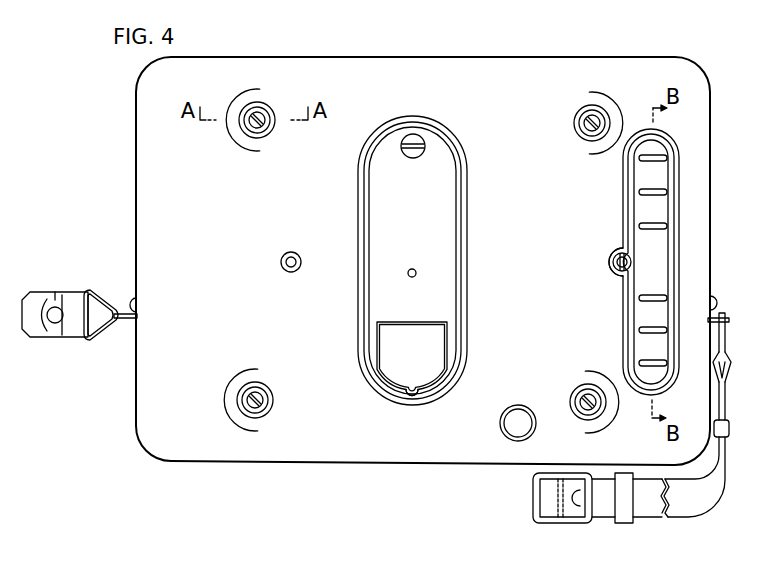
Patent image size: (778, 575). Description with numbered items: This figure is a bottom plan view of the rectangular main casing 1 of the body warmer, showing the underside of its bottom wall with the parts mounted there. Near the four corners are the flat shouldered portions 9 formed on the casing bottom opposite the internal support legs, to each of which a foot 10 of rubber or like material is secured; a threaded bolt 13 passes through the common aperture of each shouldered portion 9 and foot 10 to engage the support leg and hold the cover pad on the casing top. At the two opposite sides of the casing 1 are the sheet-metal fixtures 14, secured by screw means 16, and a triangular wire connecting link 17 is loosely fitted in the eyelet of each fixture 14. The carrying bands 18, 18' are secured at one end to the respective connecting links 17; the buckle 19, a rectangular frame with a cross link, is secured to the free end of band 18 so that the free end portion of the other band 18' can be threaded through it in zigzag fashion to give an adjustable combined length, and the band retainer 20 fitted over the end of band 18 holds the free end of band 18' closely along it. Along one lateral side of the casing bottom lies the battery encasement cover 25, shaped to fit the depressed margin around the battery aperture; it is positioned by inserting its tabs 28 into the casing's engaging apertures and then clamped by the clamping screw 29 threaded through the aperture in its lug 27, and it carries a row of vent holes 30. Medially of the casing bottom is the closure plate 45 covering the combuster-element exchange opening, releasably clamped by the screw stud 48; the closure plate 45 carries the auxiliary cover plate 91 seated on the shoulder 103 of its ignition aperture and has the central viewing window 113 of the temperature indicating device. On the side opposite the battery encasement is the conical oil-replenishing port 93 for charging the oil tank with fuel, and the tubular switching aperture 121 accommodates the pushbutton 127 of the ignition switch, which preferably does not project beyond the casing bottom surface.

The main casing 1 is at (140, 172).
The flat shouldered portions 9 is at (240, 103).
The feet 10 is at (253, 131).
The threaded bolt 13 is at (262, 127).
The fixtures 14 is at (714, 322).
The screw means 16 is at (713, 302).
The connecting link 17 is at (720, 346).
The carrying band 18 is at (660, 489).
The carrying band 18' is at (55, 292).
The buckle 19 is at (534, 504).
The band retainer 20 is at (629, 523).
The battery encasement cover 25 is at (636, 210).
The lug 27 is at (611, 259).
The tabs 28 is at (627, 310).
The clamping screw 29 is at (614, 269).
The vent holes 30 is at (643, 192).
The closure plate 45 is at (438, 148).
The screw stud 48 is at (406, 138).
The auxiliary cover plate 91 is at (437, 350).
The oil-replenishing port 93 is at (298, 270).
The shoulder of ignition aperture 103 is at (389, 383).
The viewing window 113 is at (412, 268).
The tubular switching aperture 121 is at (504, 432).
The pushbutton 127 is at (504, 422).